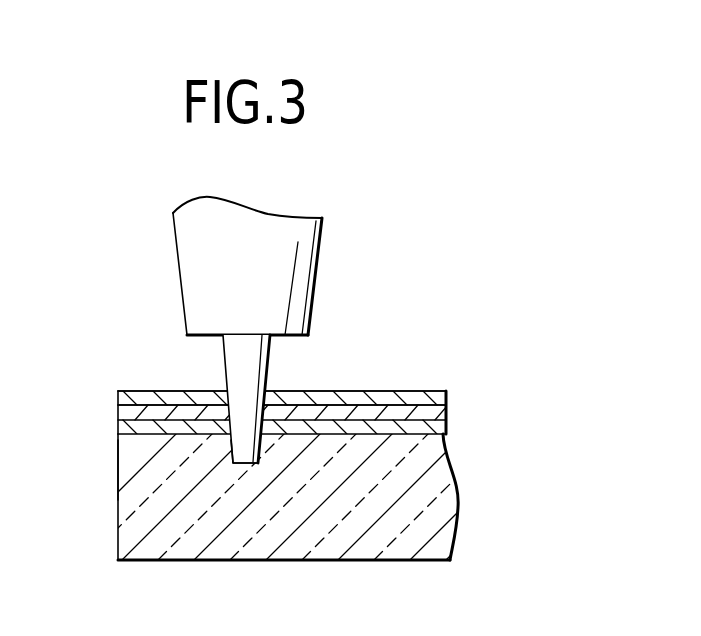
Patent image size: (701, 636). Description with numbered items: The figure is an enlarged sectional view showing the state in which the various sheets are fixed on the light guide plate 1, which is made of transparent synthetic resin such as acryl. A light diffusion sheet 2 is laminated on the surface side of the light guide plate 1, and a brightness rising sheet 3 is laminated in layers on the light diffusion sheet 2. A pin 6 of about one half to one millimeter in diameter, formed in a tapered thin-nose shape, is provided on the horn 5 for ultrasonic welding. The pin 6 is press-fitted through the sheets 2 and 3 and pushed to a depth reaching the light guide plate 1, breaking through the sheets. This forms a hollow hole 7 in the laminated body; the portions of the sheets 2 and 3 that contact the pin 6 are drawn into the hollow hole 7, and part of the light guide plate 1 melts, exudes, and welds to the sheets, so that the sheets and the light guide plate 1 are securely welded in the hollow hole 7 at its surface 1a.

The light guide plate 1 is at (467, 508).
The surface of substrate 1a is at (117, 483).
The light diffusion sheet 2 is at (453, 428).
The brightness rising sheet 3 is at (413, 398).
The horn for ultrasonic welding 5 is at (303, 273).
The pin 6 is at (253, 365).
The hollow hole 7 is at (236, 400).